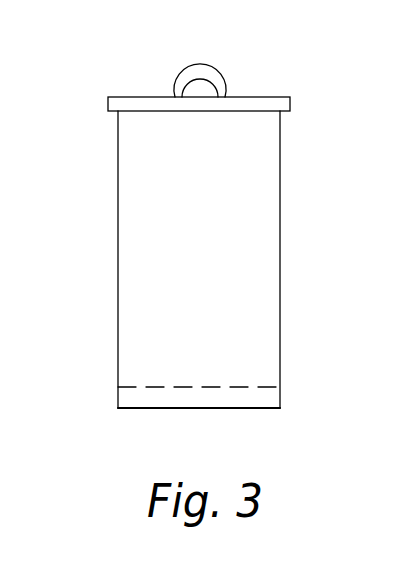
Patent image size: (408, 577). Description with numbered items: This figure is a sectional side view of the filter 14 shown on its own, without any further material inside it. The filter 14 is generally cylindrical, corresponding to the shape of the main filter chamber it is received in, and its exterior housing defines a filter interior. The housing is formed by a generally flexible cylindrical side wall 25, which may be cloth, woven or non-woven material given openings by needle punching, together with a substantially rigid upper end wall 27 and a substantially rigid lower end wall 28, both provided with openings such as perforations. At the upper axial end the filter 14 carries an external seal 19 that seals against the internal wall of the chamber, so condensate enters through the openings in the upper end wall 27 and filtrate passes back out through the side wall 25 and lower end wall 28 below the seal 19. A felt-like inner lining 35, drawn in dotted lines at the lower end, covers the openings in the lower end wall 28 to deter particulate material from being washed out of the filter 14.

The filter 14 is at (207, 248).
The external seal 19 is at (280, 100).
The side wall 25 is at (138, 165).
The upper end wall 27 is at (237, 97).
The lower end wall 28 is at (262, 410).
The inner lining 35 is at (267, 390).